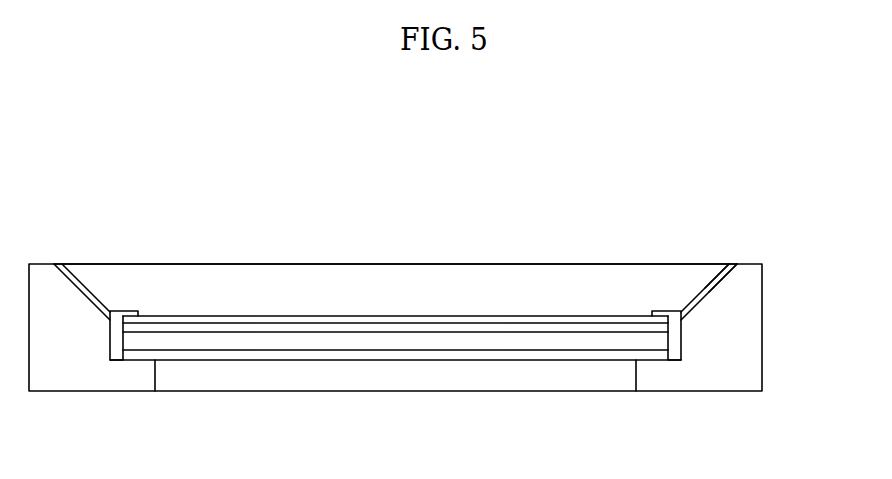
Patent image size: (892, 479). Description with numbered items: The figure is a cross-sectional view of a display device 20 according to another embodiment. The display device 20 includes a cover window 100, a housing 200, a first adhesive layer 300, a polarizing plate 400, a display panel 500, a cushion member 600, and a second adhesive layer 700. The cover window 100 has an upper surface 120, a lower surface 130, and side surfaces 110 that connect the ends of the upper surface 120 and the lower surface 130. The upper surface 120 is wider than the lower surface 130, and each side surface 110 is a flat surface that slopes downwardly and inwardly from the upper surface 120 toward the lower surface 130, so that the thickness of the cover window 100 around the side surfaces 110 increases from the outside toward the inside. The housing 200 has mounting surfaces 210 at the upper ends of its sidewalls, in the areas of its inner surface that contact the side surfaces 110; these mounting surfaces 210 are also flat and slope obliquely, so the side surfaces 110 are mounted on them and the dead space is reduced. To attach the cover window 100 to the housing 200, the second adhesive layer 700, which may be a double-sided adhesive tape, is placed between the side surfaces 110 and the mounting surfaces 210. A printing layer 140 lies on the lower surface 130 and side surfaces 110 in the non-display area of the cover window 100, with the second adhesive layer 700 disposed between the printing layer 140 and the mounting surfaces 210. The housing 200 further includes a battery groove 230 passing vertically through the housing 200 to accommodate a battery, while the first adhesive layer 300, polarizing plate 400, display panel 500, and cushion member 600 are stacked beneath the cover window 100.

The display device 20 is at (433, 126).
The cover window 100 is at (467, 277).
The upper surface 120 is at (555, 265).
The side surfaces 110 is at (716, 276).
The printing layer 140 is at (725, 277).
The mounting surfaces 210 is at (708, 294).
The second adhesive layer 700 is at (701, 302).
The first adhesive layer 300 is at (255, 317).
The polarizing plate 400 is at (303, 327).
The display panel 500 is at (365, 343).
The cushion member 600 is at (433, 355).
The lower surface 130 is at (505, 312).
The battery groove 230 is at (588, 378).
The housing 200 is at (727, 380).